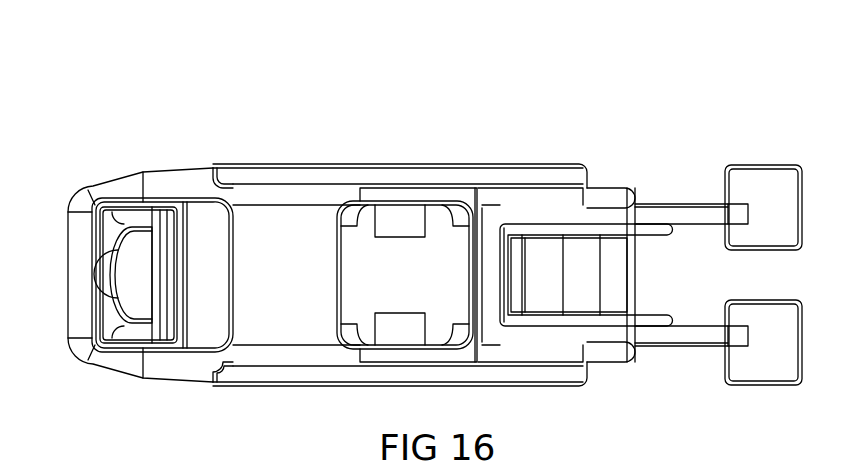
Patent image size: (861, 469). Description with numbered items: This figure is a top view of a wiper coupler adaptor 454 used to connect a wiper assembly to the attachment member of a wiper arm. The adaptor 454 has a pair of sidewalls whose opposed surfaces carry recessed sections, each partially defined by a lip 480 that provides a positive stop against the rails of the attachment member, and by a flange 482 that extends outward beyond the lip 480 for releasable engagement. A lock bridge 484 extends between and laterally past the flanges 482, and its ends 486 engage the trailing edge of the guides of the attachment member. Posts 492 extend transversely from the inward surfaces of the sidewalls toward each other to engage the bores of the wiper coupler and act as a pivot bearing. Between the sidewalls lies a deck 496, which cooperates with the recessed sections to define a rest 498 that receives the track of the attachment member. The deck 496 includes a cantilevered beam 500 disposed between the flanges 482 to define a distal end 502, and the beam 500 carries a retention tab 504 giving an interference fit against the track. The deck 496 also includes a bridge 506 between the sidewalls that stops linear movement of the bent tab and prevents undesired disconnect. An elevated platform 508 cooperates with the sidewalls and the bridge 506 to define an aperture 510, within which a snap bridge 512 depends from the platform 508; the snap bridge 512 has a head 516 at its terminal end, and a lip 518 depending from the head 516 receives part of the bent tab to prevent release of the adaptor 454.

The wiper coupler adaptor 454 is at (265, 97).
The lip 480 is at (548, 175).
The flange 482 is at (664, 215).
The lock bridge 484 is at (803, 337).
The ends 486 is at (776, 178).
The posts 492 is at (399, 218).
The deck 496 is at (490, 210).
The rest 498 is at (288, 236).
The cantilevered beam 500 is at (617, 253).
The distal end 502 is at (588, 290).
The retention tab 504 is at (543, 295).
The bridge 506 is at (485, 287).
The elevated platform 508 is at (82, 283).
The aperture 510 is at (187, 243).
The snap bridge 512 is at (105, 190).
The head 516 is at (132, 252).
The lip 518 is at (152, 275).